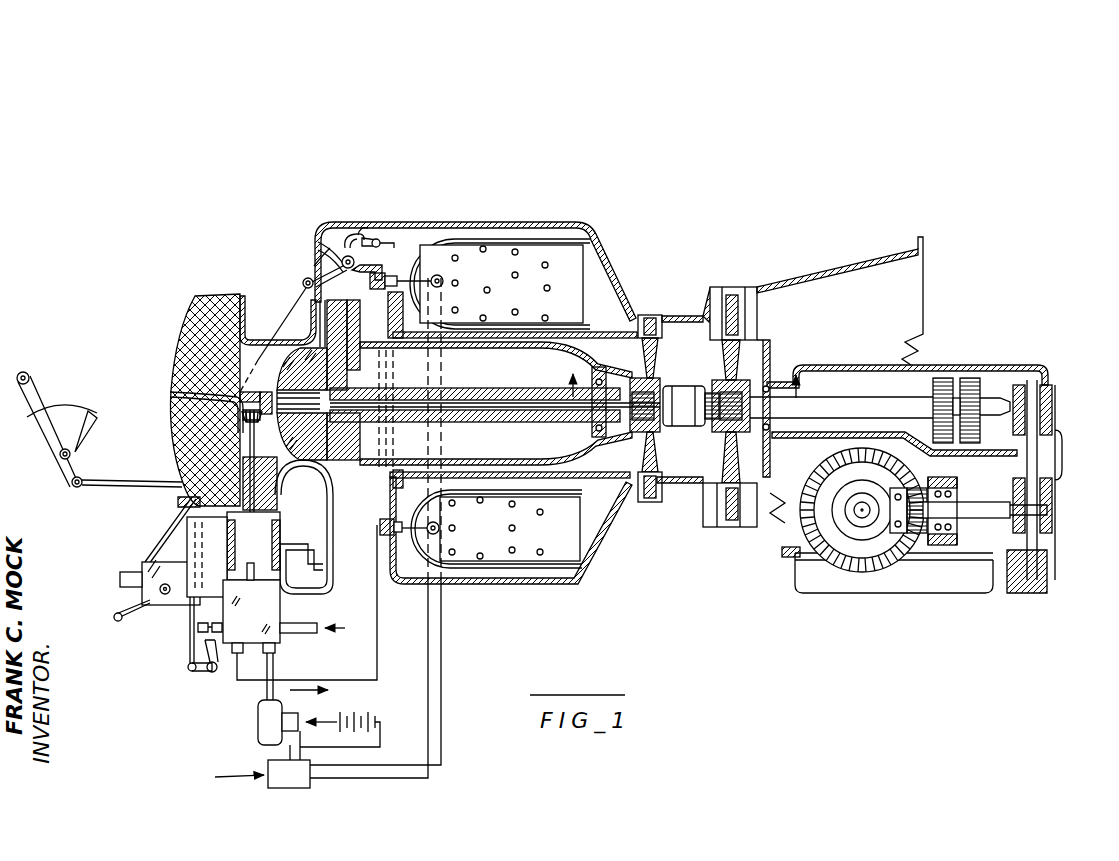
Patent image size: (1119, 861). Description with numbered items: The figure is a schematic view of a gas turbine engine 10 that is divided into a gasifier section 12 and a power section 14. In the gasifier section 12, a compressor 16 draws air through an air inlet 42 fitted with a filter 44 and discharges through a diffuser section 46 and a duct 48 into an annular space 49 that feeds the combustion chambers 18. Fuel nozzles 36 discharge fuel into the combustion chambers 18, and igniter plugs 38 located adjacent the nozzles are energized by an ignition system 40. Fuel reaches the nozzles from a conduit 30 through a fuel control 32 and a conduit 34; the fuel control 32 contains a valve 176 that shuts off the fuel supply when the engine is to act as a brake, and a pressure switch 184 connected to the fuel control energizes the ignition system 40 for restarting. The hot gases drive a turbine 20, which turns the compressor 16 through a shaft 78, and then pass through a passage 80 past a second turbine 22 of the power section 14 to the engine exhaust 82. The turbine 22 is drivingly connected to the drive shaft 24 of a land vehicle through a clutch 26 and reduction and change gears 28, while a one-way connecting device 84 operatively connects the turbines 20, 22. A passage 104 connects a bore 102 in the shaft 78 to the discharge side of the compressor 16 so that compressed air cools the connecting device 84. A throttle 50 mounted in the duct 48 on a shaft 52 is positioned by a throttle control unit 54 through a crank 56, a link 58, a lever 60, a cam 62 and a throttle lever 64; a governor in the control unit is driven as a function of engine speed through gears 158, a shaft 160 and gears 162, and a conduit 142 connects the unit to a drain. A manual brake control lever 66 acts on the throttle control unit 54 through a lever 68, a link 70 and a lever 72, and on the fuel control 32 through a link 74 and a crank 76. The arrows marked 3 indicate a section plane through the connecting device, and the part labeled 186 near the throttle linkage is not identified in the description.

The gas turbine engine 10 is at (674, 206).
The gasifier section 12 is at (520, 219).
The power section 14 is at (953, 358).
The compressor 16 is at (320, 338).
The combustion chambers 18 is at (576, 293).
The turbine 20 is at (648, 316).
The turbine 22 is at (728, 313).
The drive shaft 24 is at (862, 517).
The clutch 26 is at (985, 395).
The reduction and change gears 28 is at (1043, 470).
The conduit 30 is at (320, 610).
The fuel control 32 is at (277, 637).
The conduit 34 is at (368, 683).
The fuel nozzles 36 is at (413, 278).
The igniter plugs 38 is at (440, 277).
The ignition system 40 is at (357, 766).
The air inlet 42 is at (253, 357).
The filter 44 is at (182, 352).
The diffuser section 46 is at (304, 279).
The duct 48 is at (377, 235).
The annular space 49 is at (475, 226).
The throttle 50 is at (395, 243).
The shaft 52 is at (343, 257).
The throttle control unit 54 is at (138, 566).
The crank 56 is at (125, 602).
The link 58 is at (165, 530).
The lever 60 is at (312, 258).
The cam 62 is at (352, 231).
The throttle lever 64 is at (378, 240).
The manual brake control lever 66 is at (30, 376).
The lever 68 is at (80, 467).
The link 70 is at (136, 477).
The lever 72 is at (178, 507).
The link 74 is at (188, 642).
The crank 76 is at (202, 672).
The shaft 78 is at (462, 395).
The passage 80 is at (688, 312).
The engine exhaust 82 is at (859, 308).
The one-way connecting device 84 is at (690, 427).
The bore 102 is at (495, 405).
The passage 104 is at (348, 373).
The conduit 142 is at (222, 598).
The gears 158 is at (275, 538).
The shaft 160 is at (272, 500).
The gears 162 is at (248, 399).
The valve 176 is at (200, 624).
The pressure switch 184 is at (262, 722).
The bracket 186 is at (359, 281).
The section line 3 is at (683, 384).